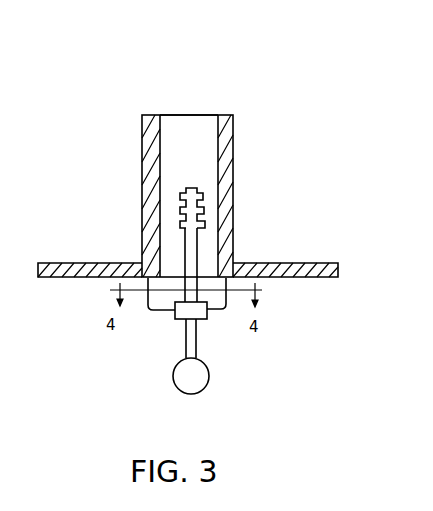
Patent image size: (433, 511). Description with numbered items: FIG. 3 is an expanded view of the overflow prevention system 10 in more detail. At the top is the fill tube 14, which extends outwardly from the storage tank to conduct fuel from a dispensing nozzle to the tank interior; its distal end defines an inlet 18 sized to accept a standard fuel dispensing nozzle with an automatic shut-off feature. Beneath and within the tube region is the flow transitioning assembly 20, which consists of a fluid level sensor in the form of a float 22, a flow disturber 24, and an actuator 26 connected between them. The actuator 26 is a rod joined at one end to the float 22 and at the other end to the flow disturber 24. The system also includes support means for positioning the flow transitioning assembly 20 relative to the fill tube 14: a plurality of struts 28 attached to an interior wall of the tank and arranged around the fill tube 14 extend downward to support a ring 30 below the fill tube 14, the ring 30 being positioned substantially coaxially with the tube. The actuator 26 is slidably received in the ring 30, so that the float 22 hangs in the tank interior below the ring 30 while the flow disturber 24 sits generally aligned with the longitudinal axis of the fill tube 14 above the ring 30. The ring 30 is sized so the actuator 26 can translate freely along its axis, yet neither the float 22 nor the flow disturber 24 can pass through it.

The overflow prevention system 10 is at (141, 336).
The fill tube 14 is at (233, 172).
The inlet 18 is at (171, 113).
The flow transitioning assembly 20 is at (200, 341).
The float 22 is at (172, 374).
The flow disturber 24 is at (204, 216).
The actuator 26 is at (199, 253).
The struts 28 is at (148, 300).
The ring 30 is at (176, 319).